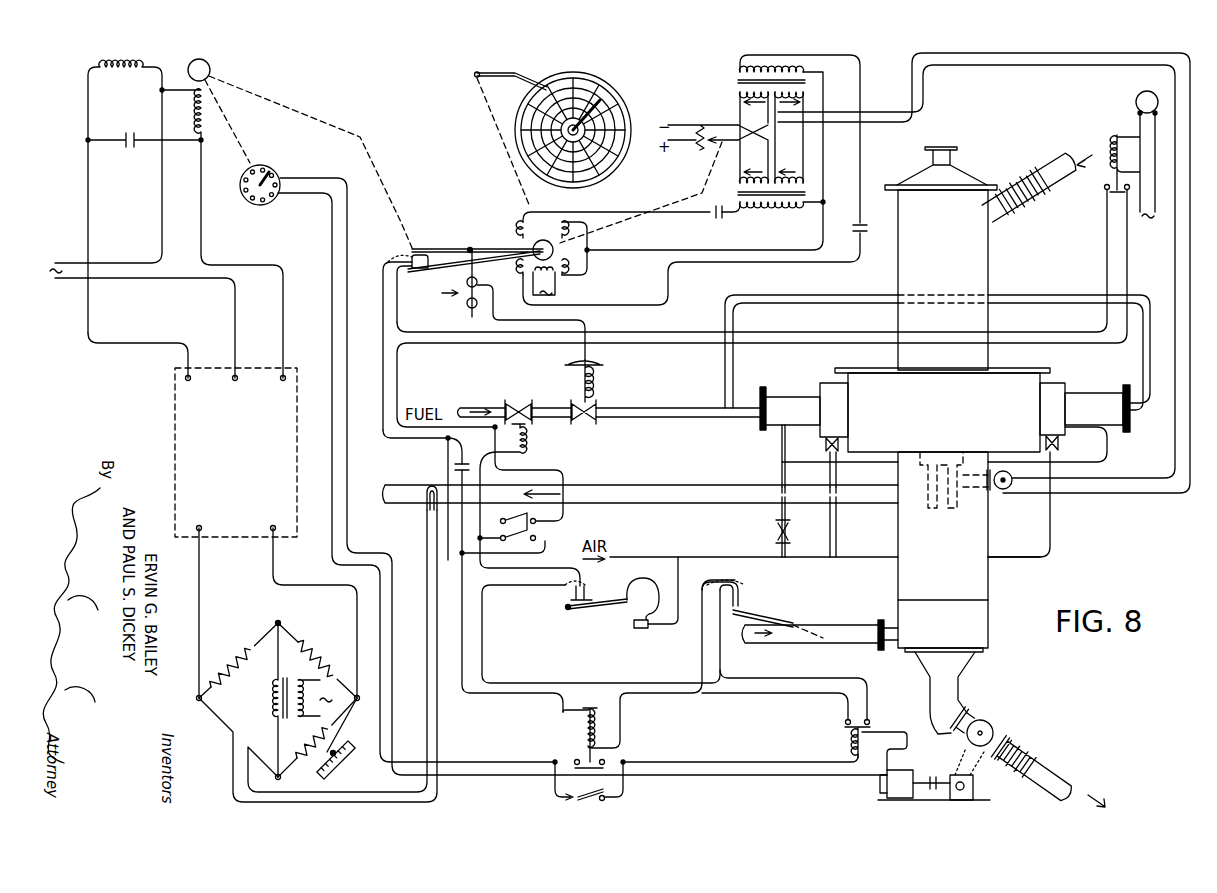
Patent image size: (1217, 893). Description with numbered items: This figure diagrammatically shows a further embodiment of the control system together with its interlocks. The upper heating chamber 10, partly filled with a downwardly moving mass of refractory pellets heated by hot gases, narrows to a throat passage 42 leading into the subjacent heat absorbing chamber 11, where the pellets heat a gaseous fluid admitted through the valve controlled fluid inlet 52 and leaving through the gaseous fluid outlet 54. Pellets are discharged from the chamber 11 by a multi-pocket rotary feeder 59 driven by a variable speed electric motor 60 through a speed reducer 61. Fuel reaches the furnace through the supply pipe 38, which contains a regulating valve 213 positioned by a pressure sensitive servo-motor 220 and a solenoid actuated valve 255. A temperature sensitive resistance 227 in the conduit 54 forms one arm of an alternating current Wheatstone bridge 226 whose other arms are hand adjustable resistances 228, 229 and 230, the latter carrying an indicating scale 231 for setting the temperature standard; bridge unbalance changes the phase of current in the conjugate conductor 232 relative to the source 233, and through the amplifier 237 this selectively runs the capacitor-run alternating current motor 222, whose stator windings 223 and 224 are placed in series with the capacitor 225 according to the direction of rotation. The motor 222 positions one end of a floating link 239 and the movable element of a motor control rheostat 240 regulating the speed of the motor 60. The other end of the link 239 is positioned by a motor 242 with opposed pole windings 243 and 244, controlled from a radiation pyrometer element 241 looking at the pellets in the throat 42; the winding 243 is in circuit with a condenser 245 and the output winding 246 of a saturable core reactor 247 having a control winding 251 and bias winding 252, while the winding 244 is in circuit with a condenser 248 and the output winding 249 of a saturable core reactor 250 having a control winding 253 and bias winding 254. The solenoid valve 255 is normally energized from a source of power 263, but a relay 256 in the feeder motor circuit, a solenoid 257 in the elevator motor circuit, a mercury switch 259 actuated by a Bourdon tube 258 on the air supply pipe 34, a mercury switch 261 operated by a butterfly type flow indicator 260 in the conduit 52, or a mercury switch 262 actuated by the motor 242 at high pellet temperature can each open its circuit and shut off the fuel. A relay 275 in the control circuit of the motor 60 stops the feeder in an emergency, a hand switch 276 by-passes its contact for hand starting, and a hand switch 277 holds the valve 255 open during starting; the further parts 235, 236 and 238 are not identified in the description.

The upper heating chamber 10 is at (955, 259).
The heat absorbing chamber 11 is at (958, 552).
The air supply pipe 34 is at (700, 558).
The fuel supply pipe 38 is at (703, 419).
The throat passage 42 is at (942, 460).
The valve controlled fluid inlet 52 is at (834, 642).
The gaseous fluid outlet 54 is at (620, 485).
The multi-pocket rotary feeder 59 is at (985, 720).
The variable speed electric motor 60 is at (883, 785).
The speed reducer 61 is at (973, 788).
The regulating valve 213 is at (587, 424).
The pressure sensitive servo-motor 220 is at (605, 366).
The capacitor-run alternating current motor 222 is at (272, 64).
The stator winding 223 is at (136, 80).
The stator winding 224 is at (208, 115).
The capacitor 225 is at (135, 150).
The alternating current Wheatstone bridge 226 is at (262, 707).
The temperature sensitive resistance 227 is at (422, 507).
The hand adjustable resistance 228 is at (258, 650).
The hand adjustable resistance 229 is at (302, 648).
The hand adjustable resistance 230 is at (333, 737).
The indicating scale 231 is at (338, 770).
The conjugate conductor 232 is at (276, 572).
The source 233 is at (278, 732).
The pointer 235 is at (603, 100).
The spiral scale / cam 236 is at (600, 184).
The amplifier 237 is at (236, 452).
The adjusting handle 238 is at (487, 80).
The floating link 239 is at (450, 248).
The motor control rheostat 240 is at (265, 164).
The temperature sensitive element 241 is at (1002, 490).
The motor 242 is at (630, 272).
The pole winding 243 is at (521, 228).
The pole winding 244 is at (588, 245).
The condenser 245 is at (718, 221).
The output winding 246 is at (760, 209).
The saturable core reactor 247 is at (741, 200).
The condenser 248 is at (850, 231).
The output winding 249 is at (740, 70).
The saturable core reactor 250 is at (737, 92).
The control winding 251 is at (804, 180).
The adjustable bias winding 252 is at (738, 178).
The control winding 253 is at (805, 98).
The bias winding 254 is at (738, 97).
The solenoid actuated valve 255 is at (528, 428).
The relay 256 is at (765, 745).
The solenoid 257 is at (1115, 140).
The Bourdon tube 258 is at (626, 629).
The mercury switch 259 is at (565, 600).
The butterfly type flow indicator 260 is at (820, 627).
The mercury switch 261 is at (748, 609).
The mercury switch 262 is at (484, 341).
The source of power 263 is at (454, 466).
The relay 275 is at (568, 744).
The hand switch 276 is at (608, 784).
The hand switch 277 is at (590, 539).